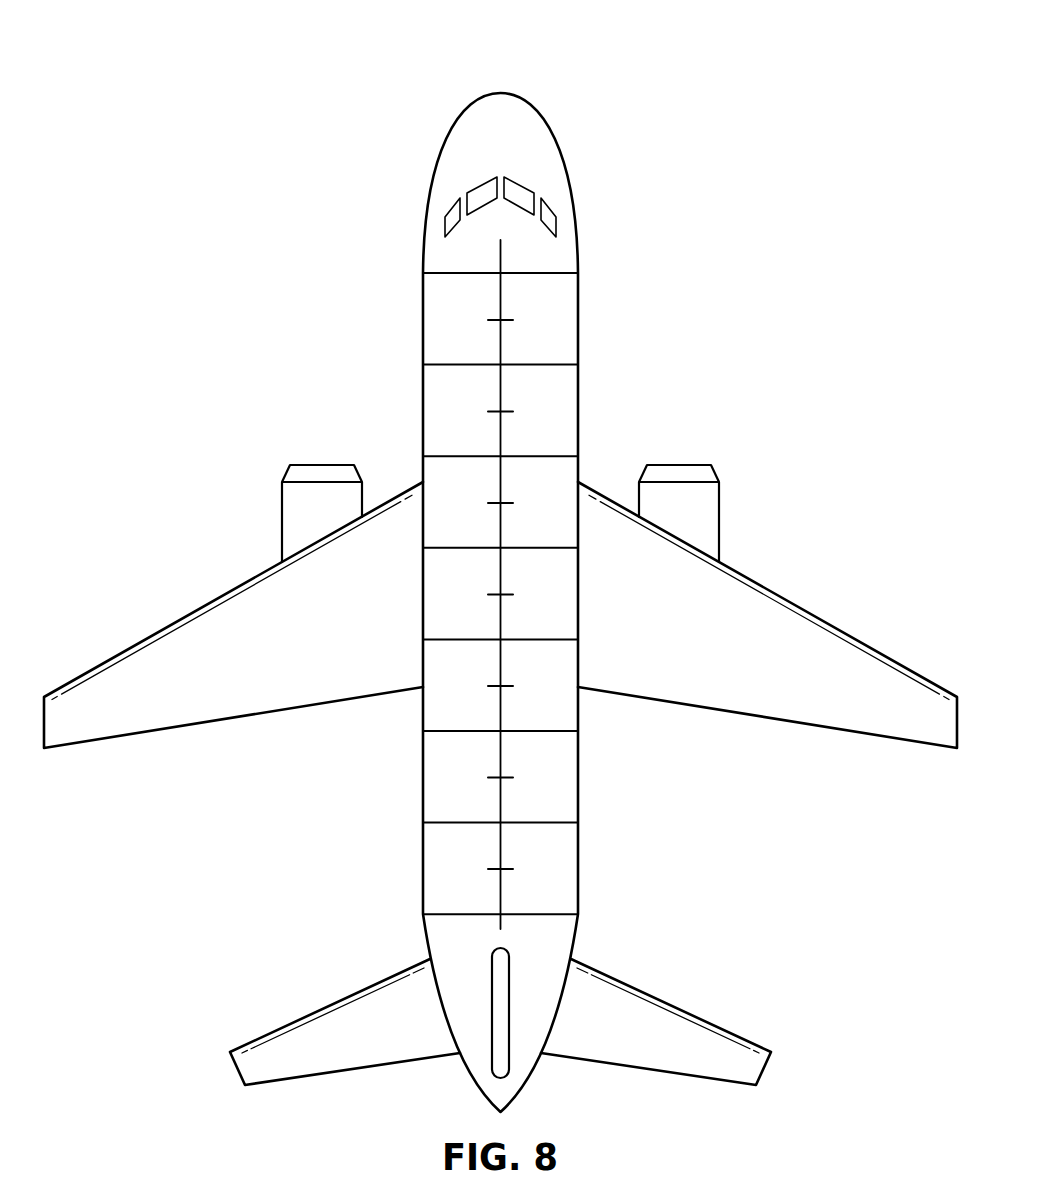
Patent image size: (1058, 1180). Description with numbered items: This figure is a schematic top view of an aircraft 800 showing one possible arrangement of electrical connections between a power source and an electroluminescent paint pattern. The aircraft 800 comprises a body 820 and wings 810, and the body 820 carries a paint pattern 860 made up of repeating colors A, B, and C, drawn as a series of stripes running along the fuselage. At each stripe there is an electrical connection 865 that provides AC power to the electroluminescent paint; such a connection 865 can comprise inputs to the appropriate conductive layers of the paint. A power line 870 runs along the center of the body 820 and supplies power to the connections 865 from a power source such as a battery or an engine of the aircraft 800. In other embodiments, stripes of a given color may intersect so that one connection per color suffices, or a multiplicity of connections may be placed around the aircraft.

The aircraft 800 is at (180, 74).
The wings 810 is at (773, 590).
The body 820 is at (579, 250).
The paint pattern 860 is at (555, 366).
The electrical connection 865 is at (492, 318).
The power line 870 is at (500, 261).